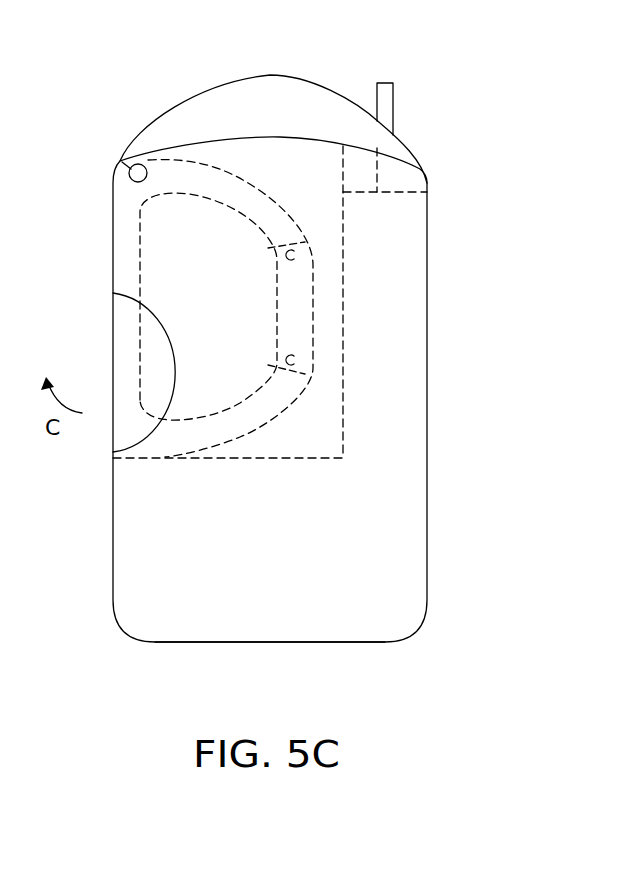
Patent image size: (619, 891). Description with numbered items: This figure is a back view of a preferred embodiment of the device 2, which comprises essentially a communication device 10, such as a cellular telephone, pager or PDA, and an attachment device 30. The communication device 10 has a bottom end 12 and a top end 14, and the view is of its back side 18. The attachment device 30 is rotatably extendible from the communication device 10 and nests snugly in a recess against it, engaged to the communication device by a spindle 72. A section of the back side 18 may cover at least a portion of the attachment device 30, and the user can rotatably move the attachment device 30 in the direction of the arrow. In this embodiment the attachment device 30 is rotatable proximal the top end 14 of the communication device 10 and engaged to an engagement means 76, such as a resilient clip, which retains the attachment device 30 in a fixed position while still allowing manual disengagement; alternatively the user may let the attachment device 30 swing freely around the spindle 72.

The device 2 is at (480, 406).
The communication device 10 is at (377, 533).
The bottom end 12 is at (272, 642).
The top end 14 is at (278, 73).
The back side 18 is at (398, 263).
The attachment device 30 is at (120, 230).
The spindle 72 is at (122, 160).
The engagement means 76 is at (357, 170).